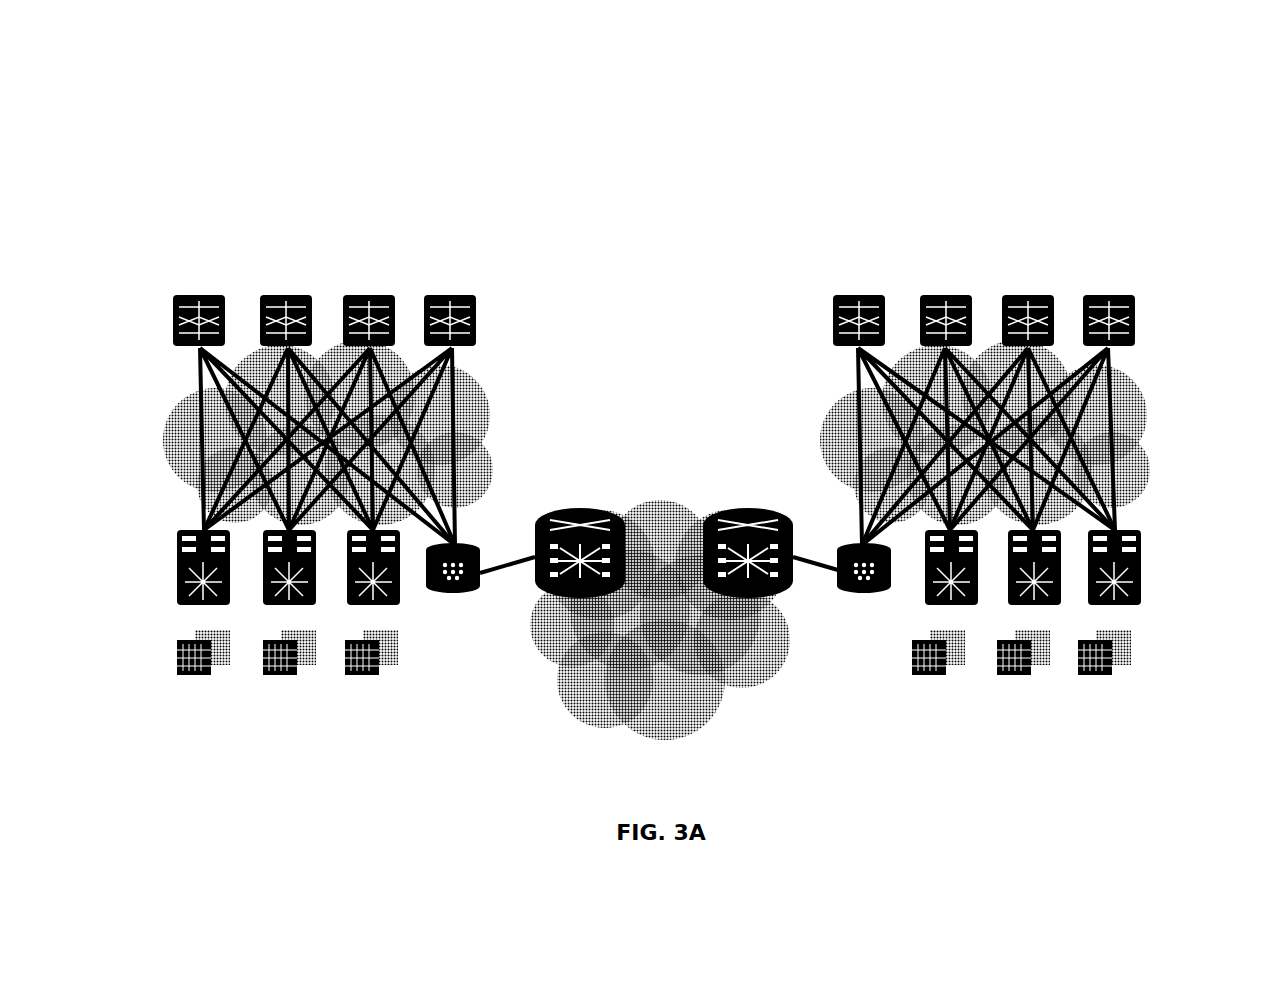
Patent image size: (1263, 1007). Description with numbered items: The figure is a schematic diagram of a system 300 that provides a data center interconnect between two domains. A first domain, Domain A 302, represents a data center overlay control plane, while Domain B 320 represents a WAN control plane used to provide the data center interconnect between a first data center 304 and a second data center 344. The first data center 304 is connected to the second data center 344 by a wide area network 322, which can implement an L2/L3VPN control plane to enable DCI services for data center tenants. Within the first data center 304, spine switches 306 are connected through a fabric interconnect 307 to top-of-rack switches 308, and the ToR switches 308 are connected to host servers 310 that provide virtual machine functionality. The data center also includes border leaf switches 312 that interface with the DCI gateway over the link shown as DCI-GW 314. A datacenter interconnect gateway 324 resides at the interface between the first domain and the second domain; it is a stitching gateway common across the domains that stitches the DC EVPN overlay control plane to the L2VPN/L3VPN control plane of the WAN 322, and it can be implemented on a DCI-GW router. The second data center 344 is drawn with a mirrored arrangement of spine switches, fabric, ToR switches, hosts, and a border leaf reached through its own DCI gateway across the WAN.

The system 300 is at (175, 135).
The Domain A 302 is at (309, 458).
The first data center 304 is at (138, 256).
The spine switches 306 is at (324, 299).
The fabric interconnect 307 is at (302, 442).
The top-of-rack switches 308 is at (260, 569).
The host servers 310 is at (287, 678).
The border leaf switches 312 is at (453, 595).
The DCI-GW 314 is at (507, 576).
The Domain B 320 is at (684, 580).
The wide area network (WAN) 322 is at (660, 620).
The datacenter interconnect gateway 324 is at (580, 525).
The second data center 344 is at (1007, 461).